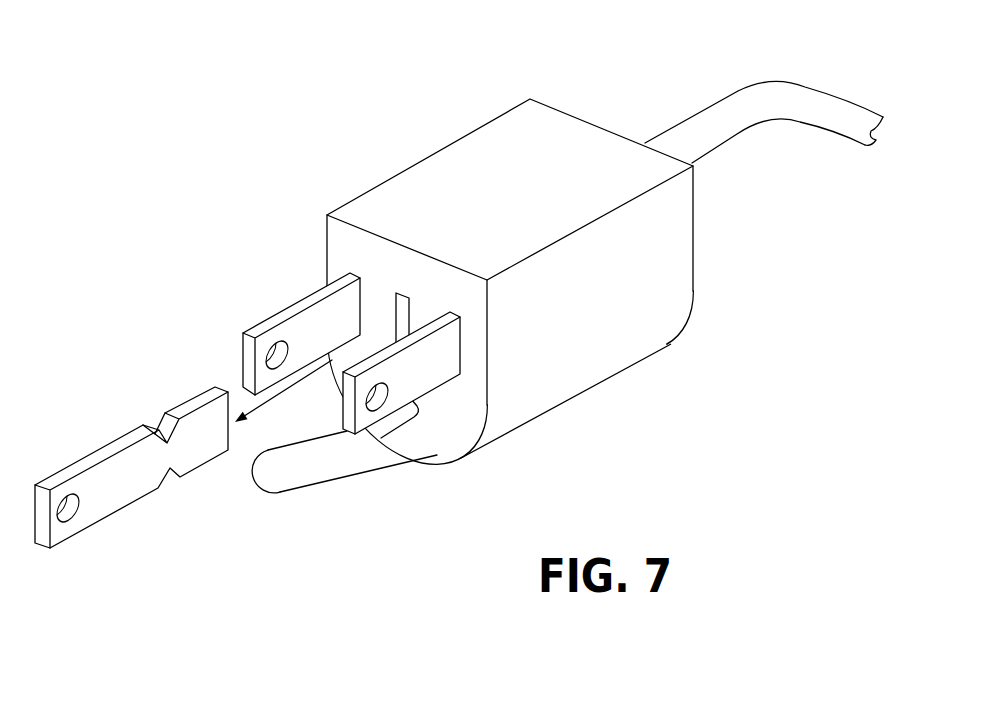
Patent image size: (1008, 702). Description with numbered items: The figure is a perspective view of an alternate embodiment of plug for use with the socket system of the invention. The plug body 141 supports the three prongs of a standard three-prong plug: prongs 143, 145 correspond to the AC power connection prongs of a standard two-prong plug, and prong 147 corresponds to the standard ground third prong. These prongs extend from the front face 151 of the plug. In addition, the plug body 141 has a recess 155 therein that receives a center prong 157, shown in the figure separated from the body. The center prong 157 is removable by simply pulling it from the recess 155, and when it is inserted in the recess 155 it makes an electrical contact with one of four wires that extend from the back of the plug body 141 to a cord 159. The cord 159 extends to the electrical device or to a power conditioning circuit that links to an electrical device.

The plug body 141 is at (508, 298).
The AC power connection prong 143 is at (265, 325).
The AC power connection prong 145 is at (425, 378).
The ground prong 147 is at (348, 458).
The front face 151 is at (475, 353).
The recess 155 is at (397, 327).
The center prong 157 is at (120, 488).
The cord 159 is at (779, 97).